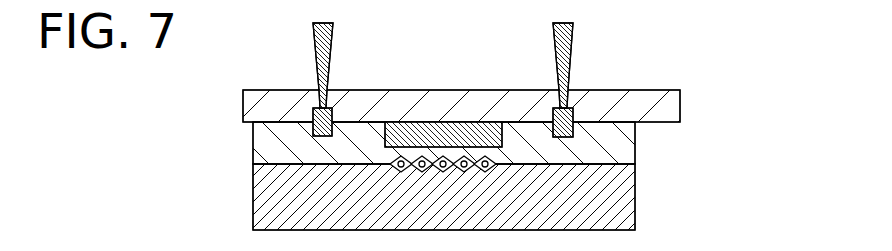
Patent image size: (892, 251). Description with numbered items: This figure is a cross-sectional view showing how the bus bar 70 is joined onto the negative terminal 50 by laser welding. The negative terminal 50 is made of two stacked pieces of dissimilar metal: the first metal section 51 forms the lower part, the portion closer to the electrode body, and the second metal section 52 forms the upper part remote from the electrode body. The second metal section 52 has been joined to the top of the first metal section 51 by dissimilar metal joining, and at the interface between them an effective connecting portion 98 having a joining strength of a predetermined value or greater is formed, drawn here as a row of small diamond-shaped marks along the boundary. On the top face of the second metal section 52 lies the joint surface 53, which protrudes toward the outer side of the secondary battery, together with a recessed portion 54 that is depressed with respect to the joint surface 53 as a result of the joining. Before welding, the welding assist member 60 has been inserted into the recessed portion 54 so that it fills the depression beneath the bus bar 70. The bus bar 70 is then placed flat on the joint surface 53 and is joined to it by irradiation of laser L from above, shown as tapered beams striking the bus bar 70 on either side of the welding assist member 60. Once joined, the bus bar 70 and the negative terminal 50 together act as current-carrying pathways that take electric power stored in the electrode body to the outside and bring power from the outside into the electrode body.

The negative terminal 50 is at (530, 176).
The first metal section 51 is at (600, 197).
The second metal section 52 is at (600, 148).
The joint surface 53 is at (288, 121).
The recessed portion 54 is at (452, 143).
The welding assist member 60 is at (463, 122).
The bus bar 70 is at (663, 105).
The effective connecting portion 98 is at (449, 158).
The laser L is at (563, 33).